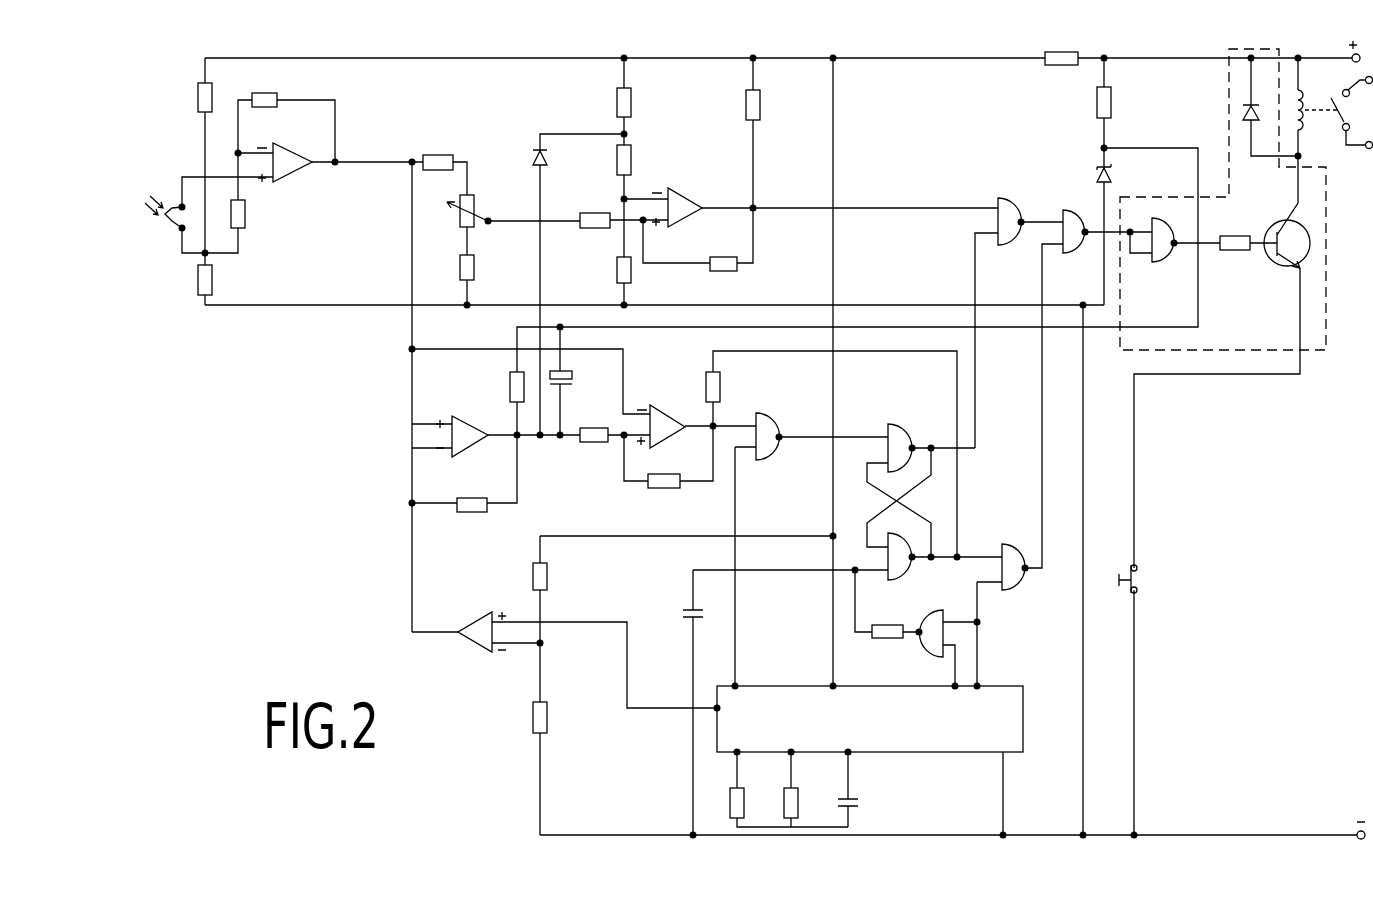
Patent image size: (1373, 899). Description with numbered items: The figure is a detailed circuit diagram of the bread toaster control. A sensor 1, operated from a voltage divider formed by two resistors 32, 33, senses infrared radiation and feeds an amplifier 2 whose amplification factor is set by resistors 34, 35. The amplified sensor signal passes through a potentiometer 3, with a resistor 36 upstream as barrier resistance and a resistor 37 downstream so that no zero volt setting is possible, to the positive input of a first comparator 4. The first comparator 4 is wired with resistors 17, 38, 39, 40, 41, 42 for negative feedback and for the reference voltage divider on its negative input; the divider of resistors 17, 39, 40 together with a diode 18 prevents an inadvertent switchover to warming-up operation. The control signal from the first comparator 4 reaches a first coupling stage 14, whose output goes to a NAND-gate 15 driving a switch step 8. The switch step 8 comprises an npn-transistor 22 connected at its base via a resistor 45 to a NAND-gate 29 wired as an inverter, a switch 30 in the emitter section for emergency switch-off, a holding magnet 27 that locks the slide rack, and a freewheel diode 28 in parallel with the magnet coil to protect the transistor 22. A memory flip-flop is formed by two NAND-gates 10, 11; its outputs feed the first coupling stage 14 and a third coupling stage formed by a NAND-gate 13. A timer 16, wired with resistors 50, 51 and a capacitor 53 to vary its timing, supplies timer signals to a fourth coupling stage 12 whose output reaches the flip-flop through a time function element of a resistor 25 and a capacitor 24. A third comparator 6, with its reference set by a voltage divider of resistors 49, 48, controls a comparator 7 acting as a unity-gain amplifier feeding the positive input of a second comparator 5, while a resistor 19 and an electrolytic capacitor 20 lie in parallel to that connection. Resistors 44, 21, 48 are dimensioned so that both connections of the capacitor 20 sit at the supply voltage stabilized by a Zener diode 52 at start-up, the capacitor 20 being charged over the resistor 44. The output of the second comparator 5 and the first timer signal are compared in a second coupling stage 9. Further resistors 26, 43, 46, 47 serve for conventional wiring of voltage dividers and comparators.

The sensor 1 is at (169, 232).
The amplifier 2 is at (292, 171).
The potentiometer 3 is at (478, 190).
The first comparator 4 is at (692, 197).
The second comparator 5 is at (676, 402).
The third comparator 6 is at (472, 645).
The comparator 7 is at (462, 410).
The switch step 8 is at (1326, 300).
The second coupling stage 9 is at (786, 408).
The NAND-gate 10 is at (907, 440).
The NAND-gate 11 is at (900, 578).
The fourth coupling stage 12 is at (928, 655).
The third coupling stage 13 is at (1018, 588).
The first coupling stage 14 is at (1024, 186).
The NAND-gate 15 is at (1078, 253).
The timer 16 is at (1023, 733).
The resistor 17 is at (631, 104).
The diode 18 is at (547, 158).
The resistor 19 is at (510, 390).
The electrolytic capacitor 20 is at (572, 378).
The resistor 21 is at (487, 512).
The npn-transistor 22 is at (1280, 220).
The capacitor 24 is at (690, 608).
The resistor 25 is at (884, 638).
The resistor 26 is at (720, 388).
The holding magnet 27 is at (1302, 92).
The freewheel diode 28 is at (1243, 110).
The NAND-gate 29 is at (1165, 262).
The switch 30 is at (1138, 590).
The resistor 32 is at (212, 100).
The resistor 33 is at (212, 282).
The resistor 34 is at (245, 218).
The resistor 35 is at (270, 93).
The resistor 36 is at (440, 155).
The resistor 37 is at (474, 268).
The resistor 38 is at (595, 228).
The resistor 39 is at (631, 272).
The resistor 40 is at (631, 160).
The resistor 41 is at (725, 271).
The resistor 42 is at (760, 105).
The resistor 43 is at (1070, 65).
The resistor 44 is at (1111, 103).
The resistor 45 is at (1235, 250).
The resistor 46 is at (594, 442).
The resistor 47 is at (664, 488).
The resistor 48 is at (533, 716).
The resistor 49 is at (533, 575).
The resistor 50 is at (744, 803).
The resistor 51 is at (798, 803).
The Zener diode 52 is at (1097, 174).
The capacitor 53 is at (858, 802).